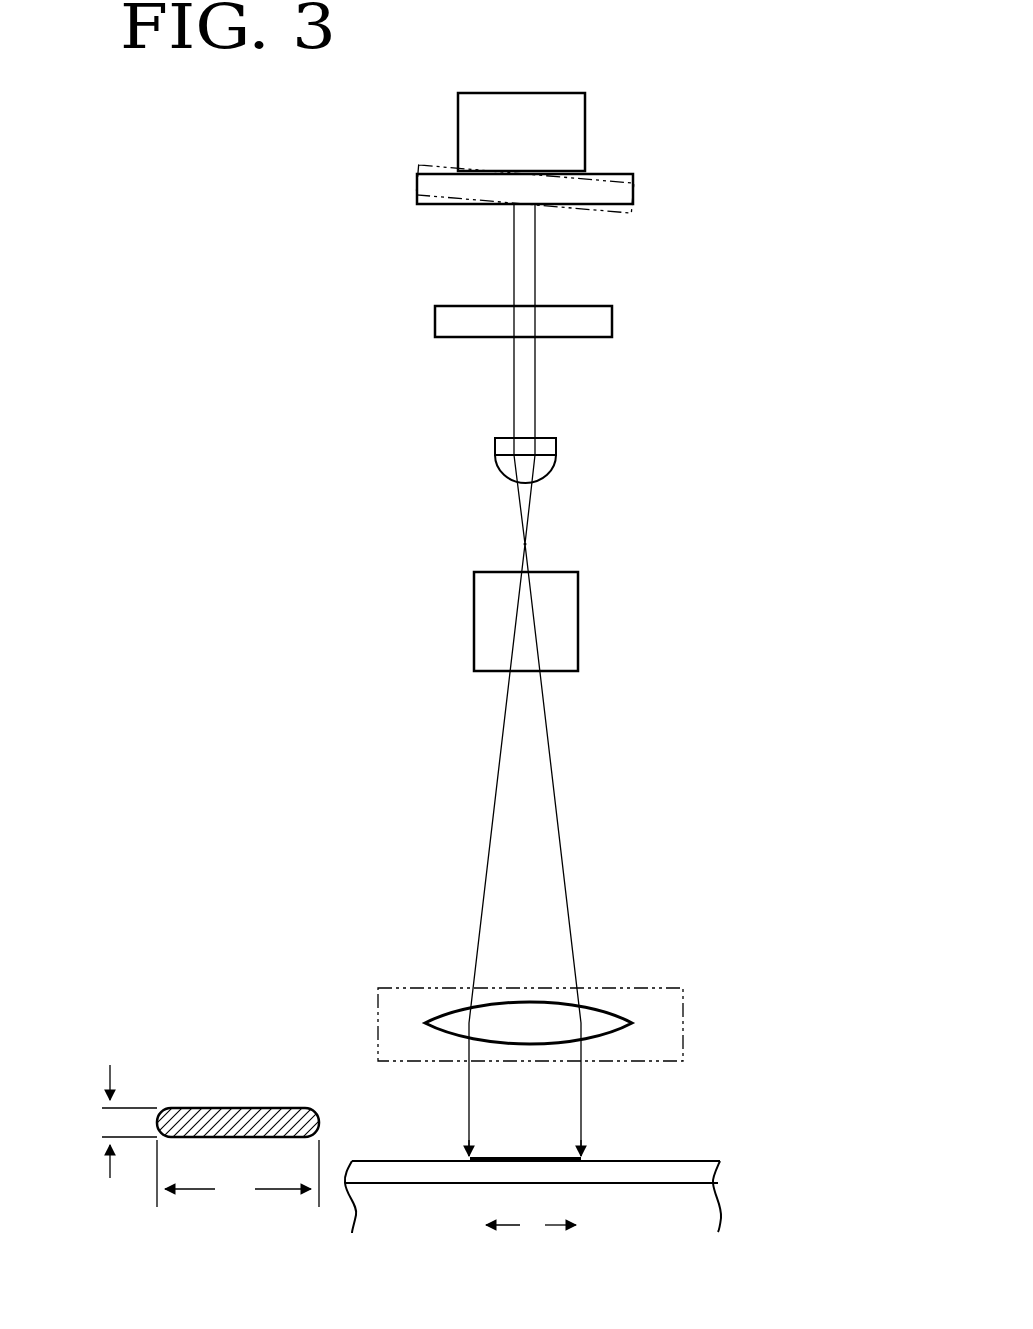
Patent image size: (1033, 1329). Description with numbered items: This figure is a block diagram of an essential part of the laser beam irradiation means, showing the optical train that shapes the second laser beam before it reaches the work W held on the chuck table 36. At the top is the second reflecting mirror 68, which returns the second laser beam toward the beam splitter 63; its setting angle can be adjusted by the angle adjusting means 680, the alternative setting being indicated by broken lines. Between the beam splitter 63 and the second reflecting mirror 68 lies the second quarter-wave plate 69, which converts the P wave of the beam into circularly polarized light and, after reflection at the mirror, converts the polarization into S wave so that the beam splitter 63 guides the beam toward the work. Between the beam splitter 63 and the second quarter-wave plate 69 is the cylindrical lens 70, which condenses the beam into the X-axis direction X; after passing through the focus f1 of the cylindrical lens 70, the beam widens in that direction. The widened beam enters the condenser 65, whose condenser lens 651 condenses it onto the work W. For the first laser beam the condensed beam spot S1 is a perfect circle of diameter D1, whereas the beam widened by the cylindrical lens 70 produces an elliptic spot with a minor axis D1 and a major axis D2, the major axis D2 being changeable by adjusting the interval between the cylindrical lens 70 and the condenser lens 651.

The angle adjusting means 680 is at (585, 122).
The second reflecting mirror 68 is at (633, 187).
The second quarter-wave plate 69 is at (612, 320).
The cylindrical lens 70 is at (556, 445).
The focus f1 is at (523, 545).
The beam splitter 63 is at (578, 628).
The condenser 65 is at (693, 1003).
The condenser lens 651 is at (427, 1022).
The condensed beam spot S1 is at (492, 1157).
The diameter D1 is at (112, 1121).
The major axis D2 is at (238, 1173).
The work W is at (662, 1161).
The chuck table 36 is at (705, 1203).
The X-axis direction X is at (531, 1244).